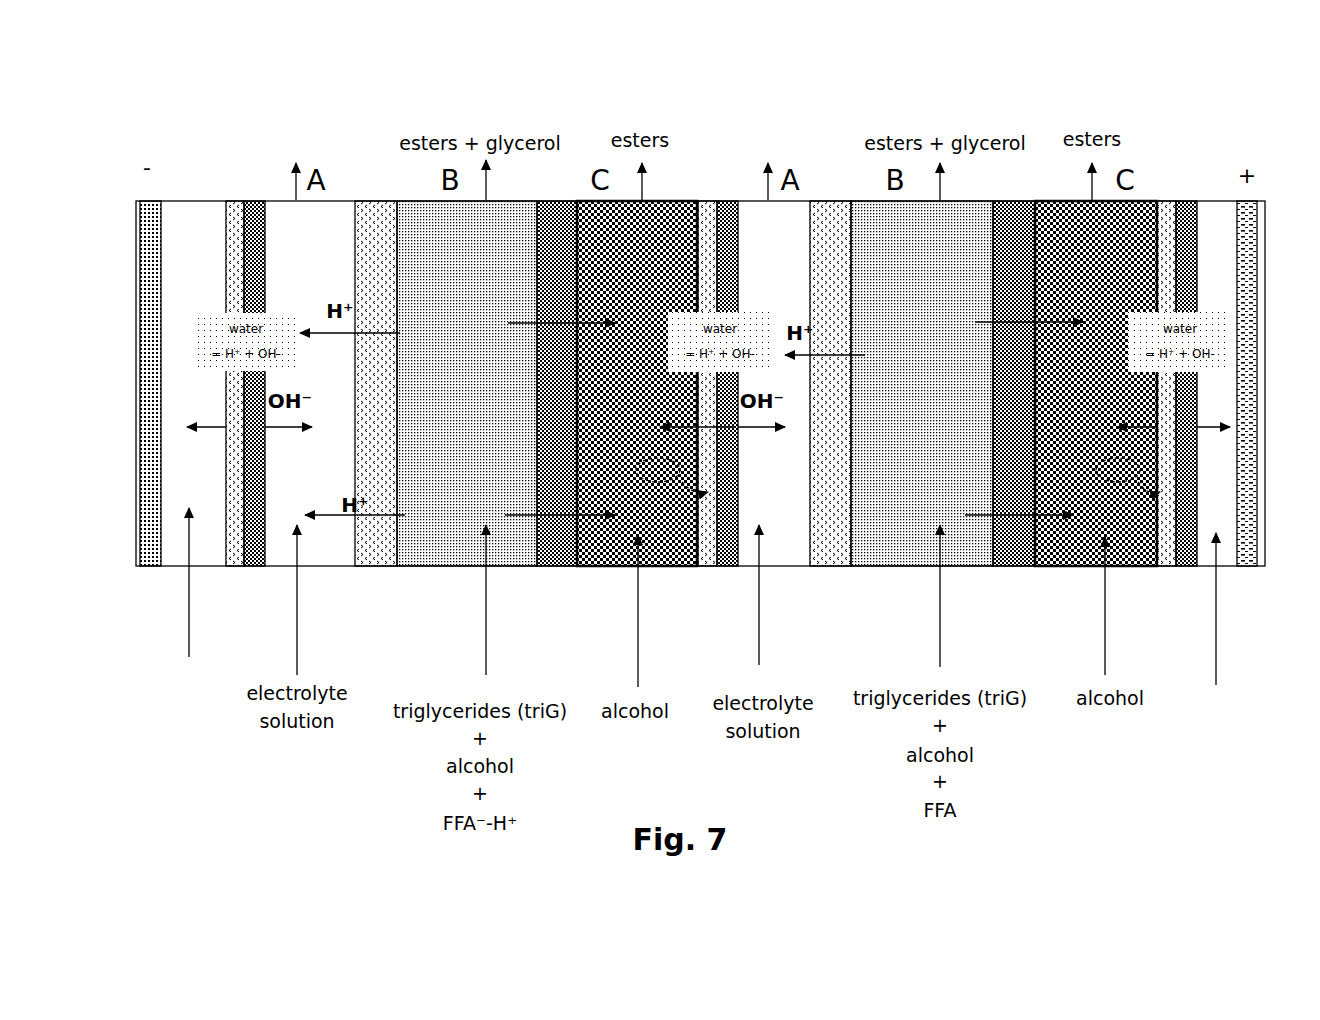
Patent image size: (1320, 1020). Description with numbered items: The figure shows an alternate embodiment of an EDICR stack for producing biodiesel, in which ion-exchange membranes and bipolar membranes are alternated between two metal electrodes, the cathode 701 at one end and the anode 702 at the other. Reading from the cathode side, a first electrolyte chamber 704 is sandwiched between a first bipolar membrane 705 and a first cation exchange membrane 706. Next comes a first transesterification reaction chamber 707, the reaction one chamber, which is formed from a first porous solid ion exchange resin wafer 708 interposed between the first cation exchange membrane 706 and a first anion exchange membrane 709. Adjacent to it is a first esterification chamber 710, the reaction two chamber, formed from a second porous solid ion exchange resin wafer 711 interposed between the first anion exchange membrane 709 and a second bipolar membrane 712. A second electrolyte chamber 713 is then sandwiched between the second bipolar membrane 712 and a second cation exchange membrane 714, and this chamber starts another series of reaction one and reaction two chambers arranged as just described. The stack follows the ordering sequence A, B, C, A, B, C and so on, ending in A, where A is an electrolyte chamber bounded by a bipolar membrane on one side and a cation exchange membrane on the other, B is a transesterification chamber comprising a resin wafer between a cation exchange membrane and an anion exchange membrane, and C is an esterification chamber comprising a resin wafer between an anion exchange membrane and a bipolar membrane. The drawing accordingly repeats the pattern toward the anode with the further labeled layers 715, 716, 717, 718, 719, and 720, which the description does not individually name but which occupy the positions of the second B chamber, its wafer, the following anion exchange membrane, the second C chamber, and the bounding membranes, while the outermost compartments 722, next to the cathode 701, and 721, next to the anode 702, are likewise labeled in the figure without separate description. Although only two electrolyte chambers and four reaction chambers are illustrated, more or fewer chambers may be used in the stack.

The cathode 701 is at (138, 198).
The anode 702 is at (1245, 557).
The first electrolyte chamber 704 is at (333, 140).
The first bipolar membrane 705 is at (248, 198).
The first cation exchange membrane 706 is at (373, 570).
The first transesterification reaction chamber 707 is at (405, 118).
The first porous solid ion exchange resin wafer 708 is at (434, 537).
The first anion exchange membrane 709 is at (548, 570).
The first esterification chamber 710 is at (697, 122).
The second porous solid ion exchange resin wafer 711 is at (623, 560).
The second bipolar membrane 712 is at (719, 198).
The second electrolyte chamber 713 is at (806, 140).
The second cation exchange membrane 714 is at (830, 560).
The triglyceride/alcohol compartment B 715 is at (860, 118).
The triglyceride alcohol FFA solution 716 is at (893, 568).
The membrane between compartments B and C 717 is at (1010, 570).
The compartment C (esters) 718 is at (1155, 118).
The cation exchange membrane 719 is at (1055, 570).
The bipolar membrane 720 is at (1177, 192).
The electrolyte solution compartment (anode side) 721 is at (1215, 559).
The electrolyte solution compartment (cathode side) 722 is at (194, 565).